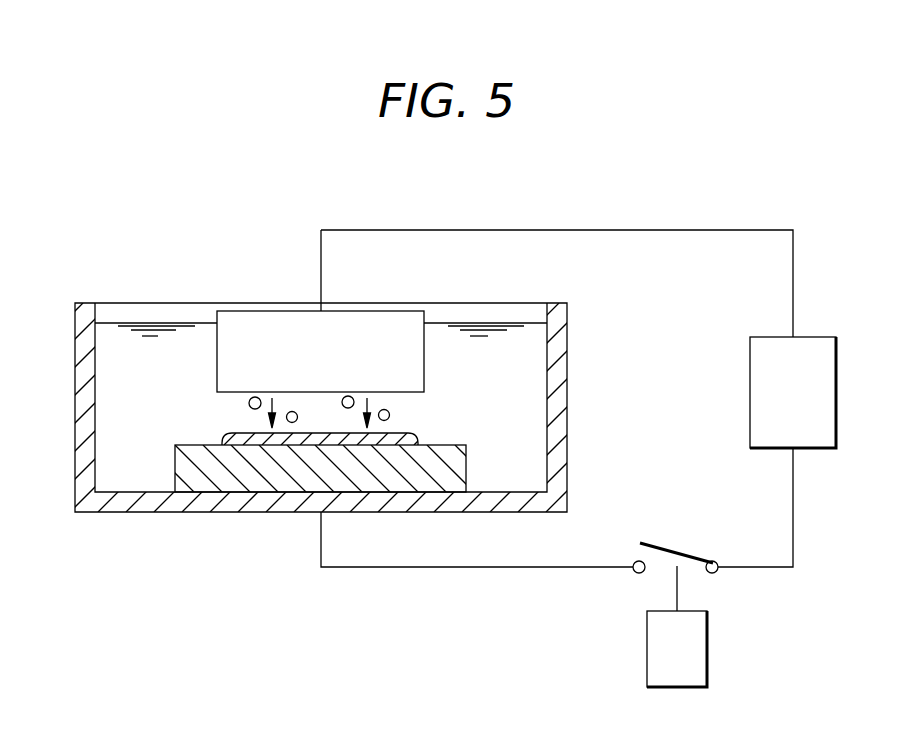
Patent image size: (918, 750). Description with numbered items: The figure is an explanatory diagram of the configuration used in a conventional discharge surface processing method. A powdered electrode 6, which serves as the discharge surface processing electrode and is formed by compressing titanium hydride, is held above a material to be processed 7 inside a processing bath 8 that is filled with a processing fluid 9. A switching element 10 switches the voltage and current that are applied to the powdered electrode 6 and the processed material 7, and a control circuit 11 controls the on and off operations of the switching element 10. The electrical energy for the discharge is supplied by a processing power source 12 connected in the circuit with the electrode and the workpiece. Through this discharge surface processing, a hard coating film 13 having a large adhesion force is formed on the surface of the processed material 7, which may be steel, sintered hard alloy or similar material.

The powdered electrode 6 is at (248, 318).
The material to be processed 7 is at (222, 476).
The processing bath 8 is at (85, 372).
The processing fluid 9 is at (112, 328).
The switching element 10 is at (670, 548).
The control circuit 11 is at (697, 643).
The processing power source 12 is at (822, 372).
The hard coating film 13 is at (280, 440).